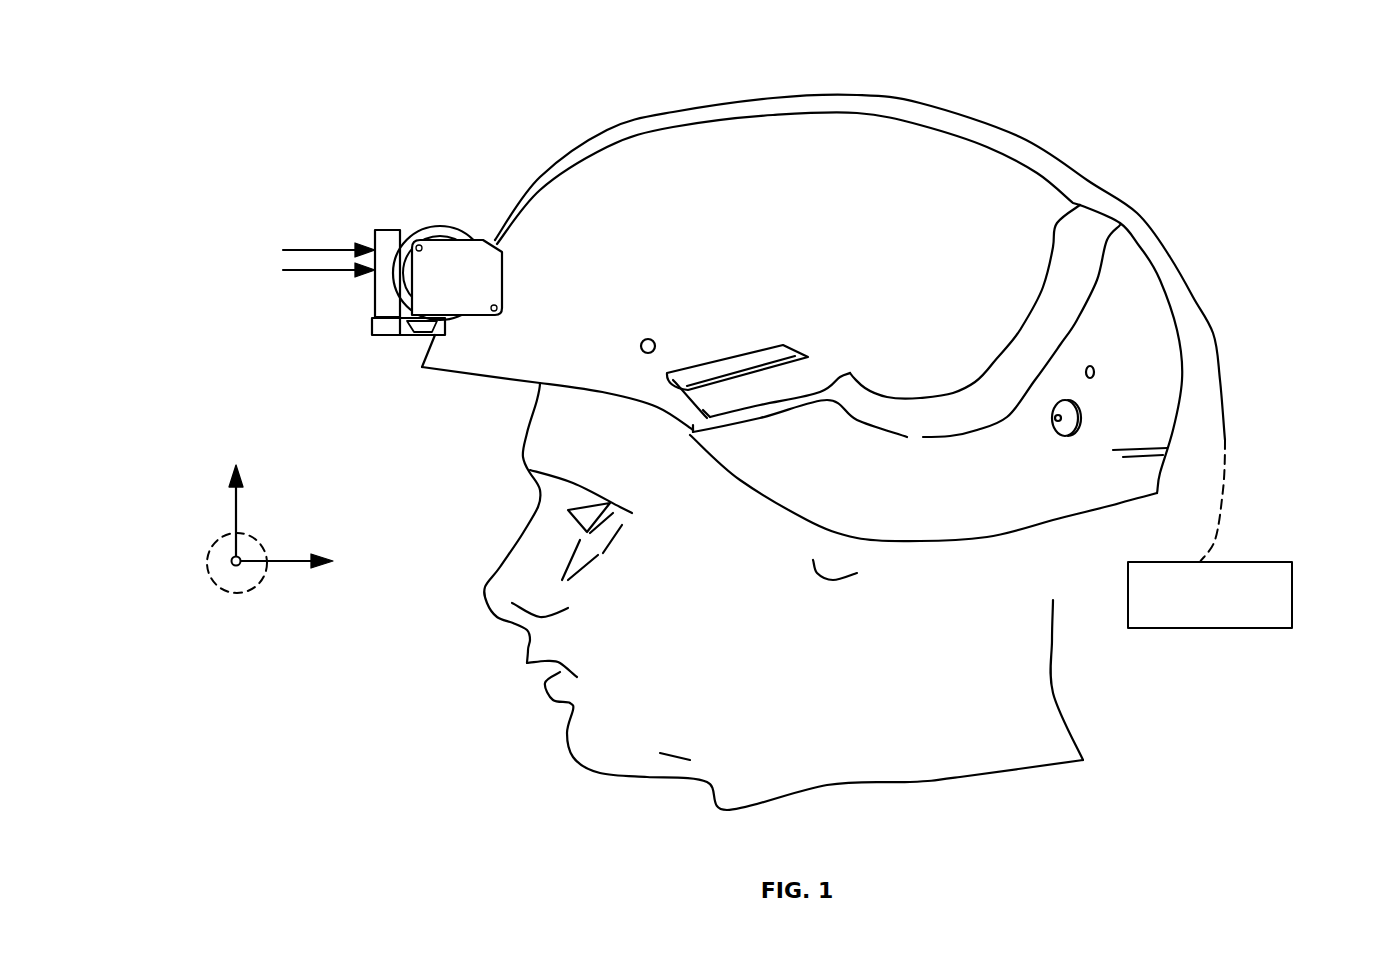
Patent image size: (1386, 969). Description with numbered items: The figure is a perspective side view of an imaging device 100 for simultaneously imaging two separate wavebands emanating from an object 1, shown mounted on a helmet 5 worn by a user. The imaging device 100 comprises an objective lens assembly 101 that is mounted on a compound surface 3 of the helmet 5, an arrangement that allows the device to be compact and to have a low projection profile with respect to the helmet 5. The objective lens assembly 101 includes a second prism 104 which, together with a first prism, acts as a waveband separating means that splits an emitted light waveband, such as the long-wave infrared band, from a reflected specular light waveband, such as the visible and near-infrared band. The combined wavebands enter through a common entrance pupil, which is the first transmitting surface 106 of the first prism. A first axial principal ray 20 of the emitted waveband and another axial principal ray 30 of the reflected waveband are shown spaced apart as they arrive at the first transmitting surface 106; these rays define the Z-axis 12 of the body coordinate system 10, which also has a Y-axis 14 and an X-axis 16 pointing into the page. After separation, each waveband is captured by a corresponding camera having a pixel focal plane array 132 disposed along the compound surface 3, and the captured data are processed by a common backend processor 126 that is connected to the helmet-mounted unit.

The imaging device 100 is at (756, 440).
The objective lens assembly 101 is at (386, 198).
The second prism 104 is at (397, 245).
The pixel focal plane array 132 is at (505, 282).
The first transmitting surface 106 is at (373, 293).
The first axial principal ray 20 is at (313, 244).
The axial principal ray 30 is at (313, 274).
The compound surface 3 is at (423, 355).
The helmet 5 is at (451, 398).
The body coordinate system 10 is at (200, 633).
The Z-axis 12 is at (277, 561).
The Y-axis 14 is at (236, 510).
The X-axis 16 is at (207, 557).
The object 1 is at (250, 588).
The backend processor 126 is at (1258, 562).